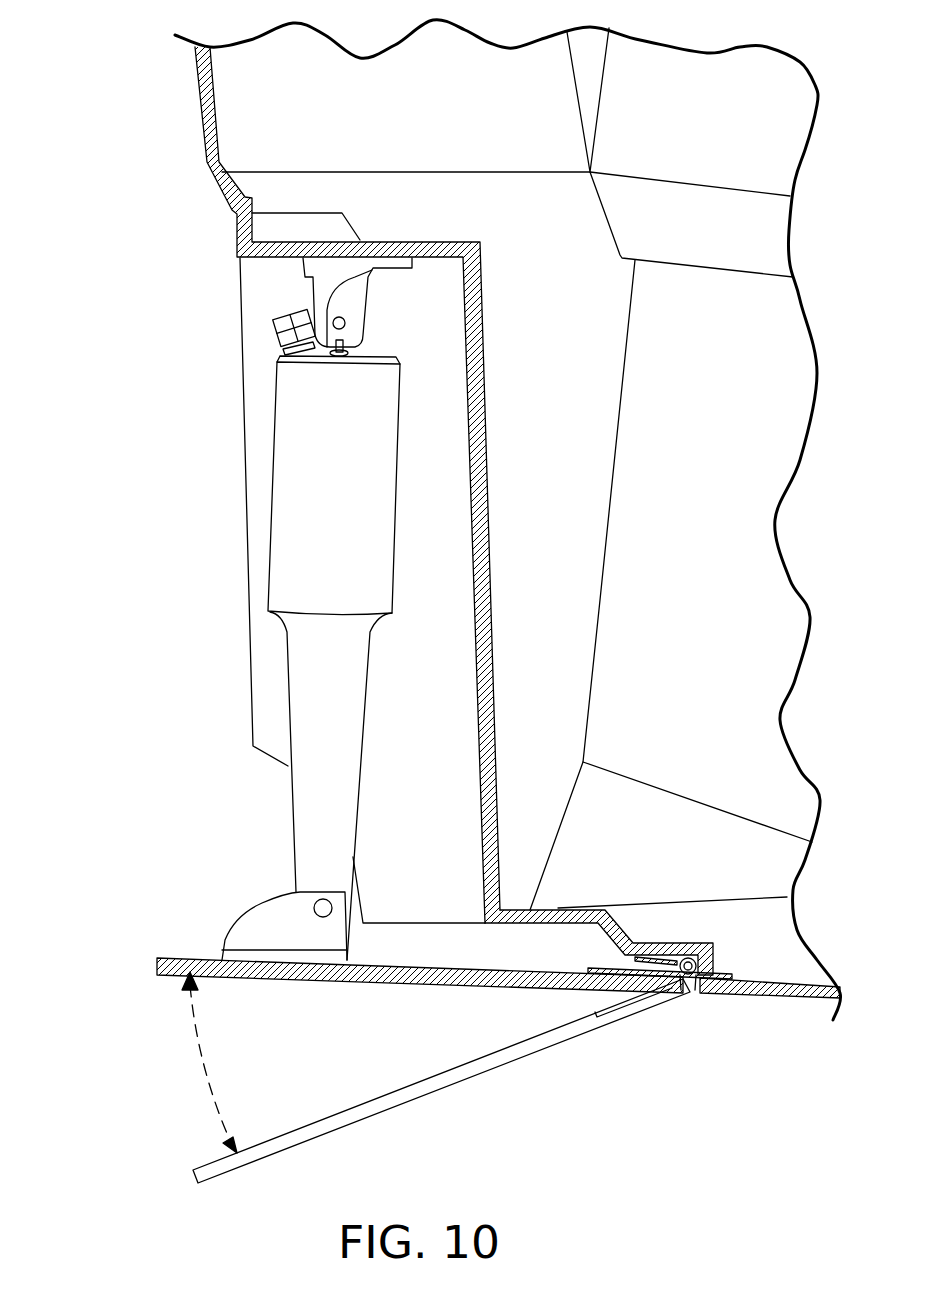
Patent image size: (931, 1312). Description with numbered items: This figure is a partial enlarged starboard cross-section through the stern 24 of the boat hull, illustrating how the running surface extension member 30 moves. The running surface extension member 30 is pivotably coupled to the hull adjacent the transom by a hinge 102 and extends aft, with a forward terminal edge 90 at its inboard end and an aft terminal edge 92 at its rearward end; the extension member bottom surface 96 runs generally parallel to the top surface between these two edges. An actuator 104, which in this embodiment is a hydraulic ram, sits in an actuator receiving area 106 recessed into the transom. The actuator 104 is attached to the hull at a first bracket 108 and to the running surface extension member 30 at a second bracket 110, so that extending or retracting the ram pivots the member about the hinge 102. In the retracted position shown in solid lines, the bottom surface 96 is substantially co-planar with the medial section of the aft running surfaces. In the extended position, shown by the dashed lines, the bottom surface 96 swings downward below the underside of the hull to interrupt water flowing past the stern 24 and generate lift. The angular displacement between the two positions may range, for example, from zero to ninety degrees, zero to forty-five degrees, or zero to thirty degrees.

The stern 24 is at (86, 194).
The running surface extension member 30 is at (344, 1014).
The forward terminal edge 90 is at (652, 955).
The aft terminal edge 92 is at (155, 966).
The extension member bottom surface 96 is at (590, 992).
The hinge 102 is at (690, 992).
The actuator 104 is at (305, 487).
The actuator receiving area 106 is at (232, 639).
The first bracket 108 is at (360, 313).
The second bracket 110 is at (260, 907).